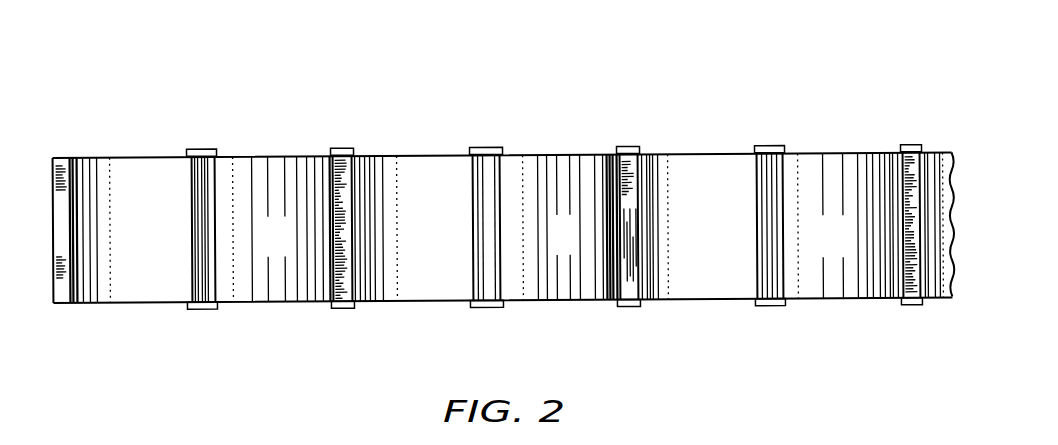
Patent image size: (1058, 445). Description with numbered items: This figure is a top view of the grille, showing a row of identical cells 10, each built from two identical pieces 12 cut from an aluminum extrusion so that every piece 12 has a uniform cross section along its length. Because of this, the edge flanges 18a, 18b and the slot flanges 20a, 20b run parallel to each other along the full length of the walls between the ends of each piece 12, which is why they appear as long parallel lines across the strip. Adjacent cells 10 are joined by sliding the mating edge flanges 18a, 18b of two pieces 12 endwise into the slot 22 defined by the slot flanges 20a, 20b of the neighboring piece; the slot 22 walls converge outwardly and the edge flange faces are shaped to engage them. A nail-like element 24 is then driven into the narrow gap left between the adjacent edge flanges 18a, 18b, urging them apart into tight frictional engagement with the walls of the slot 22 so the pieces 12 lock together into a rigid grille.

The cell 10 is at (173, 141).
The piece 12 is at (155, 253).
The edge flange 18a is at (210, 280).
The edge flange 18b is at (193, 182).
The slot flange 20a is at (340, 174).
The slot flange 20b is at (61, 167).
The slot 22 is at (491, 278).
The nail-like element 24 is at (208, 151).